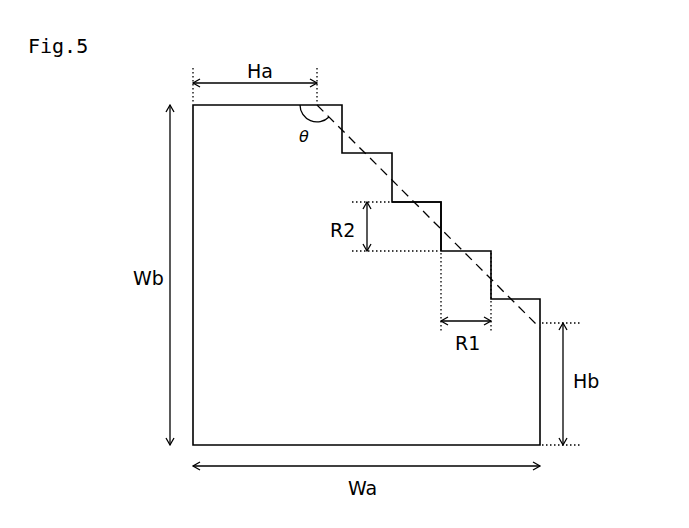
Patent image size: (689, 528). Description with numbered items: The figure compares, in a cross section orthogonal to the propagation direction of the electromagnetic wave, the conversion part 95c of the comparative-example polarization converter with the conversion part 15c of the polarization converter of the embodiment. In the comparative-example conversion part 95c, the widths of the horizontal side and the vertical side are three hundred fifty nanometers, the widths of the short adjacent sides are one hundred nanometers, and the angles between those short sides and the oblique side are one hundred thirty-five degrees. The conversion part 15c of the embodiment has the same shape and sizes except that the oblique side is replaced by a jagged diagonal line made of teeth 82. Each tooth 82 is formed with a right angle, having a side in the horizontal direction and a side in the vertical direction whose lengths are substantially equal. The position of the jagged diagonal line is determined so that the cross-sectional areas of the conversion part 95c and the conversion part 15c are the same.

The conversion part 15c is at (392, 153).
The tooth 82 is at (441, 202).
The conversion part 95c is at (500, 285).